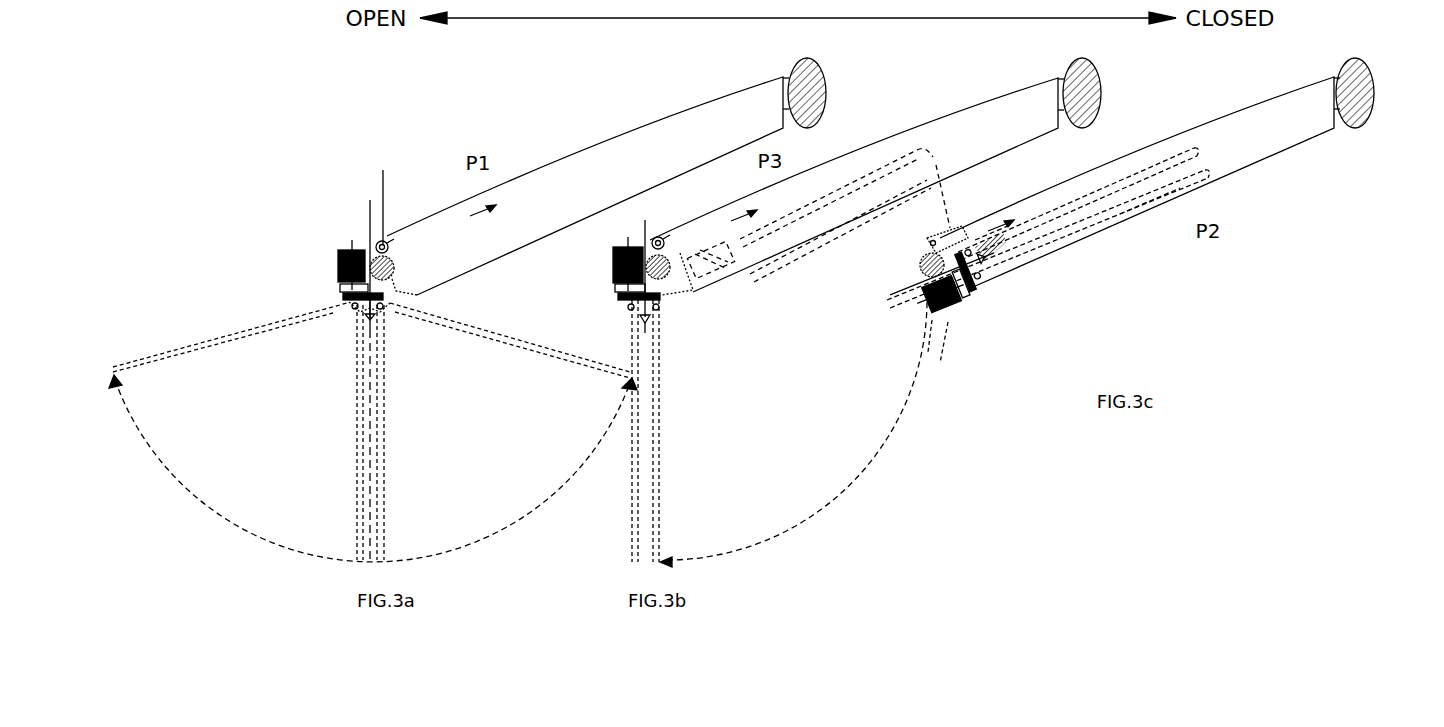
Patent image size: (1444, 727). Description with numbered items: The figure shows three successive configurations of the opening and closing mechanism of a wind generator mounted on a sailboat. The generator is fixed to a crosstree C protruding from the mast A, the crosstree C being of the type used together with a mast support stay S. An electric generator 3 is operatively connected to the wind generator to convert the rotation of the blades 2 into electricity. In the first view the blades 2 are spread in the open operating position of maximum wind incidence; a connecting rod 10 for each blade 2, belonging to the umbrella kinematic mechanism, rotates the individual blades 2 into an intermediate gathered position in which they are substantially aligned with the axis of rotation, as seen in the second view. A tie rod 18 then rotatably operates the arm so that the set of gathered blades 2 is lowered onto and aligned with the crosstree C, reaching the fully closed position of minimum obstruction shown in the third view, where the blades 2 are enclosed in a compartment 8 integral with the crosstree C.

In FIG. 3A, the blades 2 is at (305, 300).
In FIG. 3B, the blades 2 is at (660, 438).
In FIG. 3C, the blades 2 is at (1049, 245).
In FIG. 3A, the electric generator 3 is at (337, 248).
In FIG. 3B, the electric generator 3 is at (612, 252).
In FIG. 3C, the electric generator 3 is at (945, 308).
In FIG. 3C, the compartment 8 is at (1086, 237).
In FIG. 3A, the connecting rod 10 is at (350, 318).
In FIG. 3A, the tie rod 18 is at (418, 238).
In FIG. 3B, the tie rod 18 is at (693, 243).
In FIG. 3C, the tie rod 18 is at (985, 235).
In FIG. 3A, the mast A is at (826, 90).
In FIG. 3B, the mast A is at (1101, 87).
In FIG. 3C, the mast A is at (1376, 89).
In FIG. 3A, the crosstree C is at (688, 108).
In FIG. 3B, the crosstree C is at (962, 107).
In FIG. 3C, the crosstree C is at (1238, 108).
In FIG. 3A, the mast support stay S is at (383, 194).